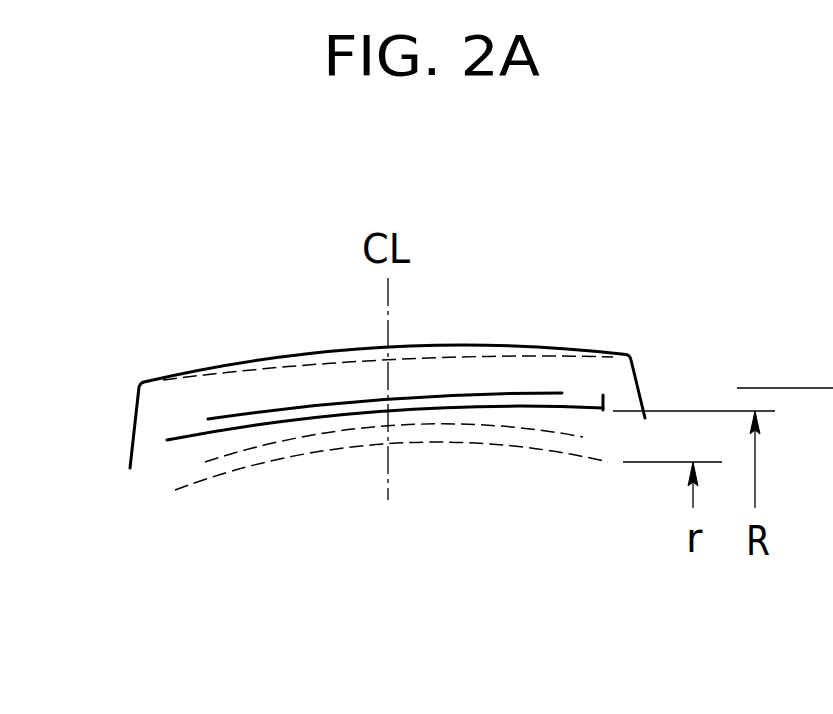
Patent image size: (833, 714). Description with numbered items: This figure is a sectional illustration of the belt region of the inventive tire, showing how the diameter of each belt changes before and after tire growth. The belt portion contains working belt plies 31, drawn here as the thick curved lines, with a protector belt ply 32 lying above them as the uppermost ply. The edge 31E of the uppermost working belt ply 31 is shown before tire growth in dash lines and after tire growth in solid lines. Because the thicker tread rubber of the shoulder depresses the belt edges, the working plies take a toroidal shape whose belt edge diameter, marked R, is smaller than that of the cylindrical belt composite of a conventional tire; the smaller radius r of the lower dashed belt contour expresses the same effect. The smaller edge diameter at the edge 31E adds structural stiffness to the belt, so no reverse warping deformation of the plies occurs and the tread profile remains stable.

The working belt ply 31 is at (508, 408).
The edge of the uppermost working belt ply 31E is at (603, 398).
The protector belt ply 32 is at (433, 398).